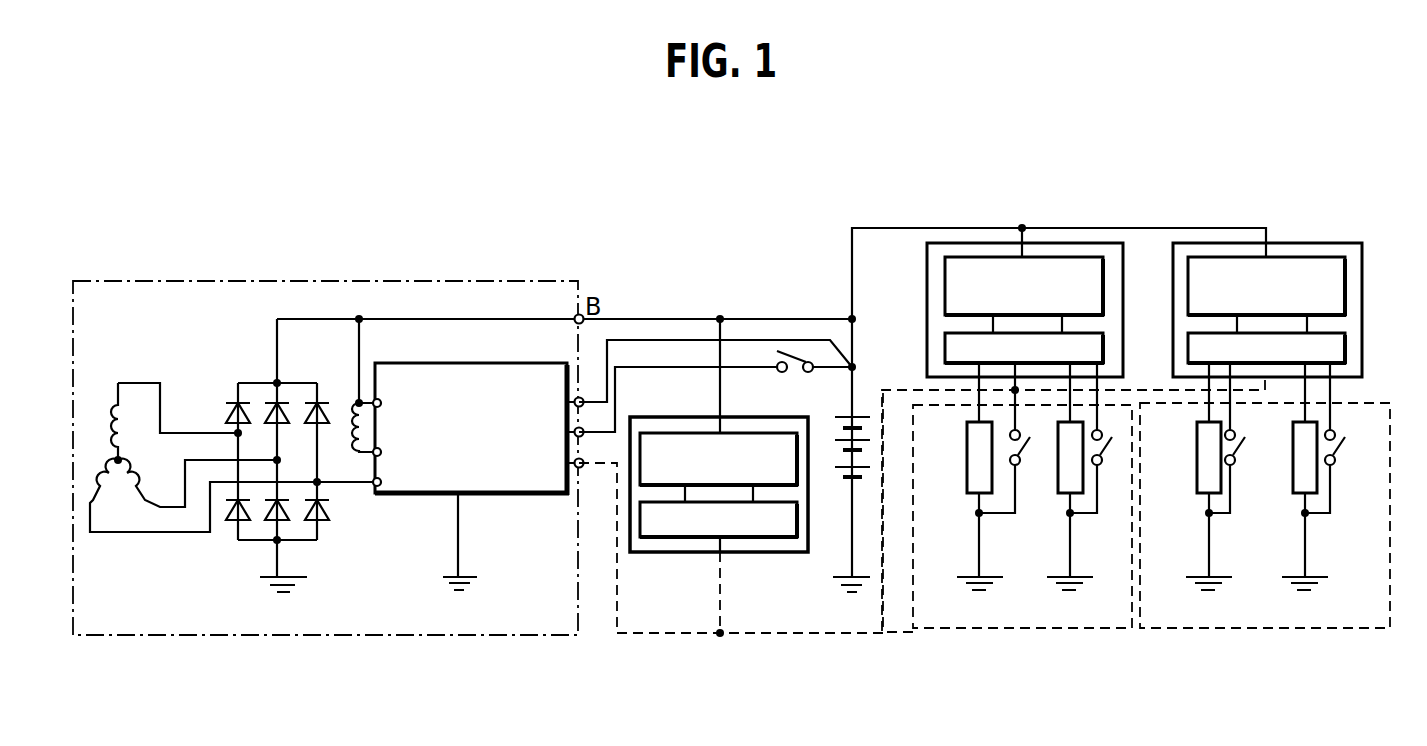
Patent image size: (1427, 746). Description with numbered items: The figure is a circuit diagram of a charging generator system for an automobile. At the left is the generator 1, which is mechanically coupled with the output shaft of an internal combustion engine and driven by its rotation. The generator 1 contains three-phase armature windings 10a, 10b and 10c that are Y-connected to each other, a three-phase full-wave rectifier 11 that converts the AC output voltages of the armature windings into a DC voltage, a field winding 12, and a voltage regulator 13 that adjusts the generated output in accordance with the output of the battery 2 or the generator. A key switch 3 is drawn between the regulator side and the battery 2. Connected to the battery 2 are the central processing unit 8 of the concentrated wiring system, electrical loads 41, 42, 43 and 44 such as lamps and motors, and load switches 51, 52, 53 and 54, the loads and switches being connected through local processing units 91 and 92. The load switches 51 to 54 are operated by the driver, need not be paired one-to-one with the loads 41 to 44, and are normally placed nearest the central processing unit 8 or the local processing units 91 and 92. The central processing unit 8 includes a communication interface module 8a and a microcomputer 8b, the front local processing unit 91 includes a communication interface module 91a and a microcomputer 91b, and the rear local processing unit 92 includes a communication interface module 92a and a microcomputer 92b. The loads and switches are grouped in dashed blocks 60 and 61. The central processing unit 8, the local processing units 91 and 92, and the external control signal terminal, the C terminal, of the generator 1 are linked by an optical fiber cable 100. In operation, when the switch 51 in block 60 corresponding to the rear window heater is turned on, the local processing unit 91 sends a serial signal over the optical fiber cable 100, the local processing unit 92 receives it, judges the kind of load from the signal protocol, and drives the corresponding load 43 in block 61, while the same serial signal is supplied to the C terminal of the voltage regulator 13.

The generator 1 is at (205, 637).
The battery 2 is at (838, 470).
The key switch 3 is at (806, 350).
The central processing unit 8 is at (719, 464).
The communication interface module 8a is at (668, 537).
The microcomputer 8b is at (668, 432).
The armature winding 10a is at (104, 500).
The armature winding 10b is at (152, 512).
The armature winding 10c is at (124, 418).
The three-phase full-wave rectifier 11 is at (318, 538).
The field winding 12 is at (350, 402).
The voltage regulator 13 is at (508, 495).
The electrical load 41 is at (967, 482).
The electrical load 42 is at (1057, 485).
The electrical load 43 is at (1195, 470).
The electrical load 44 is at (1297, 488).
The load switch 51 is at (1028, 445).
The load switch 52 is at (1107, 442).
The load switch 53 is at (1240, 440).
The load switch 54 is at (1340, 440).
The block 60 is at (1058, 632).
The block 61 is at (1228, 632).
The local processing unit 91 is at (994, 270).
The communication interface module 91a is at (945, 350).
The microcomputer 91b is at (945, 288).
The local processing unit 92 is at (1299, 283).
The communication interface module 92a is at (1345, 363).
The microcomputer 92b is at (1337, 257).
The optical fiber cable 100 is at (775, 637).